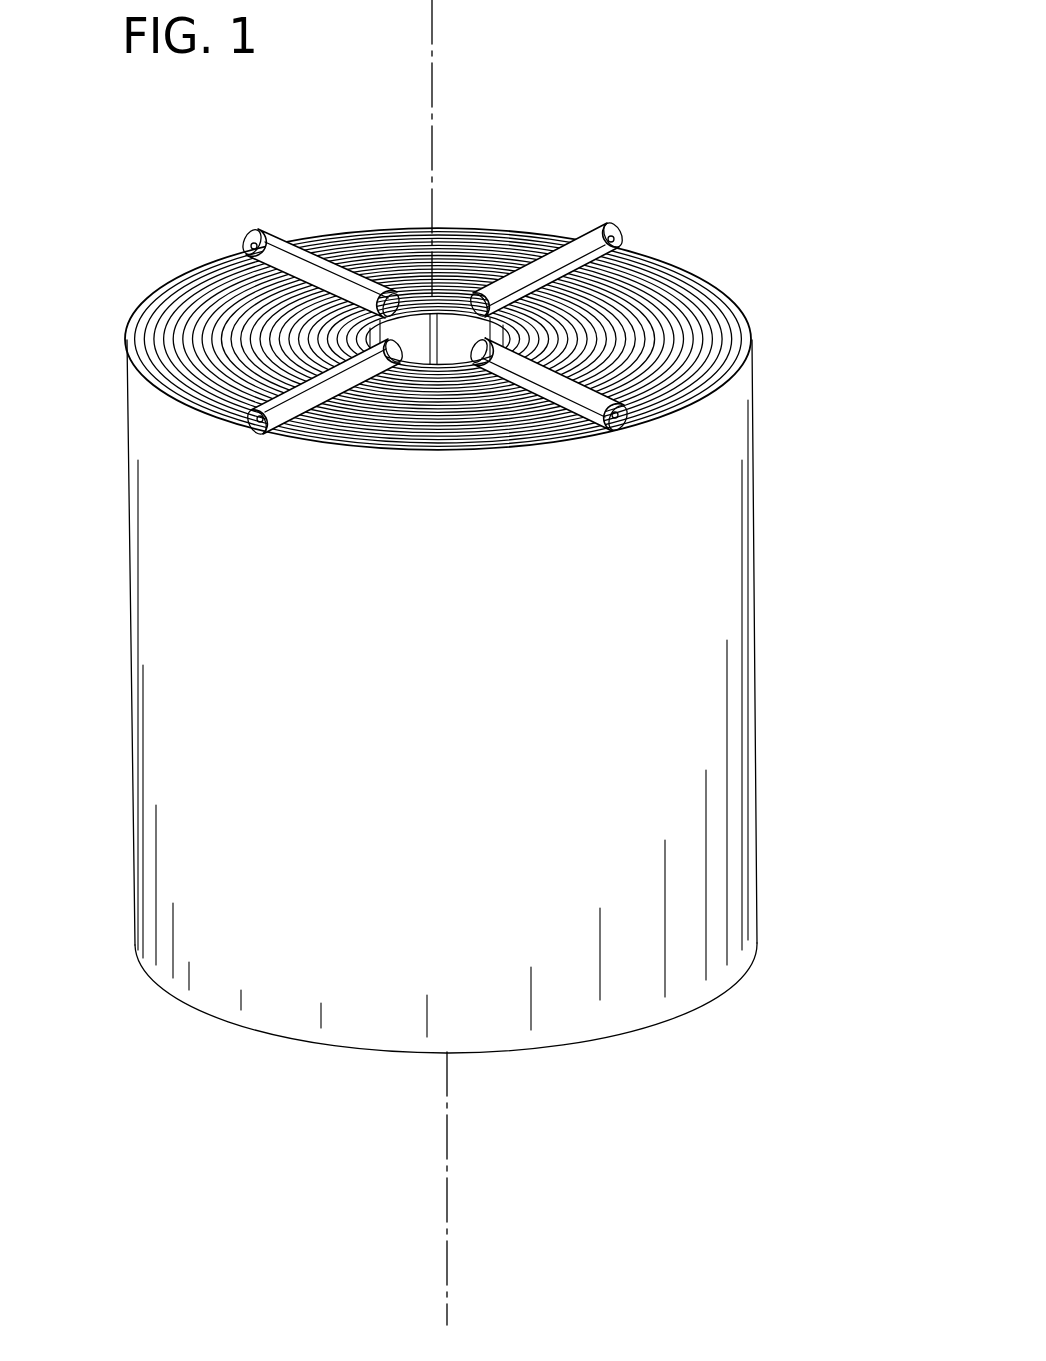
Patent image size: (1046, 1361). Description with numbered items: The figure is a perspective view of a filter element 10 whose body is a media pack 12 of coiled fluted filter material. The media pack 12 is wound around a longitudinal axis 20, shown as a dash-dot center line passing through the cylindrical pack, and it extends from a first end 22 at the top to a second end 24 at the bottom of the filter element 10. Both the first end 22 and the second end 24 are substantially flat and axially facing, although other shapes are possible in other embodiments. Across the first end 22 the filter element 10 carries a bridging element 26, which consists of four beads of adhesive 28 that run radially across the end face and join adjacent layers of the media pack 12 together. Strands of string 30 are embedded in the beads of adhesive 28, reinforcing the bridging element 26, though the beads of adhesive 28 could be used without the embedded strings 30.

The filter element 10 is at (782, 134).
The media pack 12 is at (710, 608).
The longitudinal axis 20 is at (432, 24).
The first end 22 is at (190, 332).
The second end 24 is at (670, 1013).
The bridging element 26 is at (567, 222).
The beads of adhesive 28 is at (441, 297).
The strands of string 30 is at (257, 428).